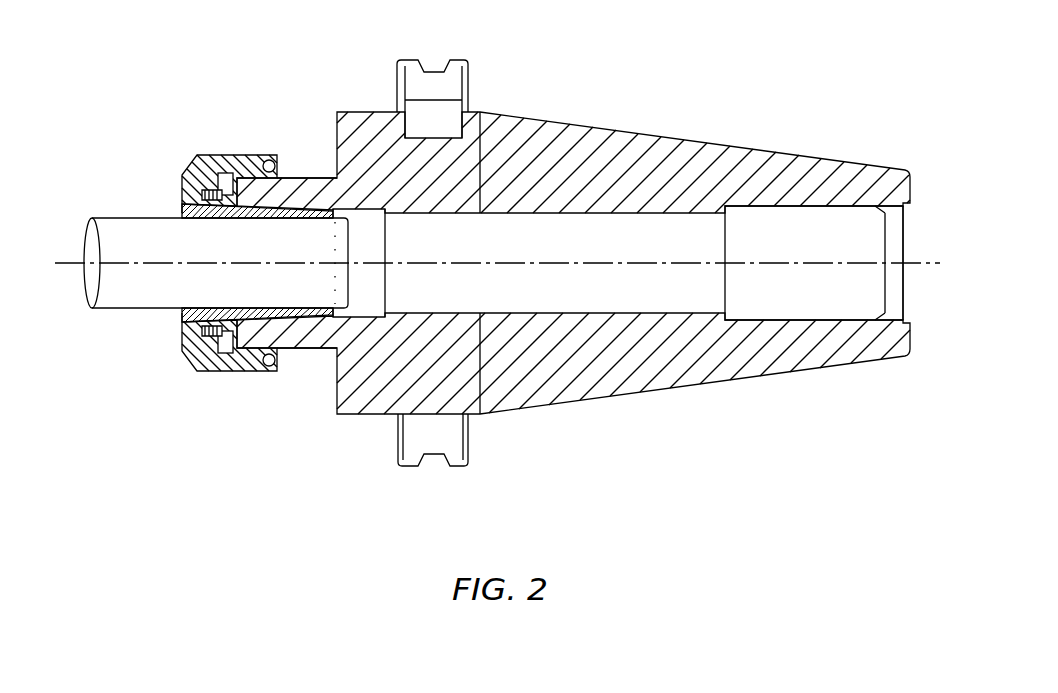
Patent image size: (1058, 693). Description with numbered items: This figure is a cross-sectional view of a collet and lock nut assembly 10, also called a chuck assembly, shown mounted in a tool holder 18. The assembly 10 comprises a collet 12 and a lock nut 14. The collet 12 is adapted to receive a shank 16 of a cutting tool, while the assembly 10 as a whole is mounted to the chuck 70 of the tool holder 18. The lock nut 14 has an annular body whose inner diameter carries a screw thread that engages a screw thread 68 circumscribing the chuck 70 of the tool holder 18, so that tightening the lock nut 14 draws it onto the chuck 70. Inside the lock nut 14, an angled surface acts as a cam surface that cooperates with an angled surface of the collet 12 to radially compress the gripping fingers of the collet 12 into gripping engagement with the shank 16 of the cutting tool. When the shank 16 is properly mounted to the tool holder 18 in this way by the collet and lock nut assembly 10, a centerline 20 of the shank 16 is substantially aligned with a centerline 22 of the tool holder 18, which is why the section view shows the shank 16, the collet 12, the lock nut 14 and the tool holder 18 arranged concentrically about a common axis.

The collet and lock nut assembly 10 is at (146, 182).
The collet 12 is at (288, 330).
The lock nut 14 is at (213, 150).
The shank 16 is at (138, 309).
The tool holder 18 is at (312, 174).
The centerline 20 is at (63, 267).
The centerline 22 is at (792, 262).
The screw thread 68 is at (252, 351).
The chuck 70 is at (315, 342).